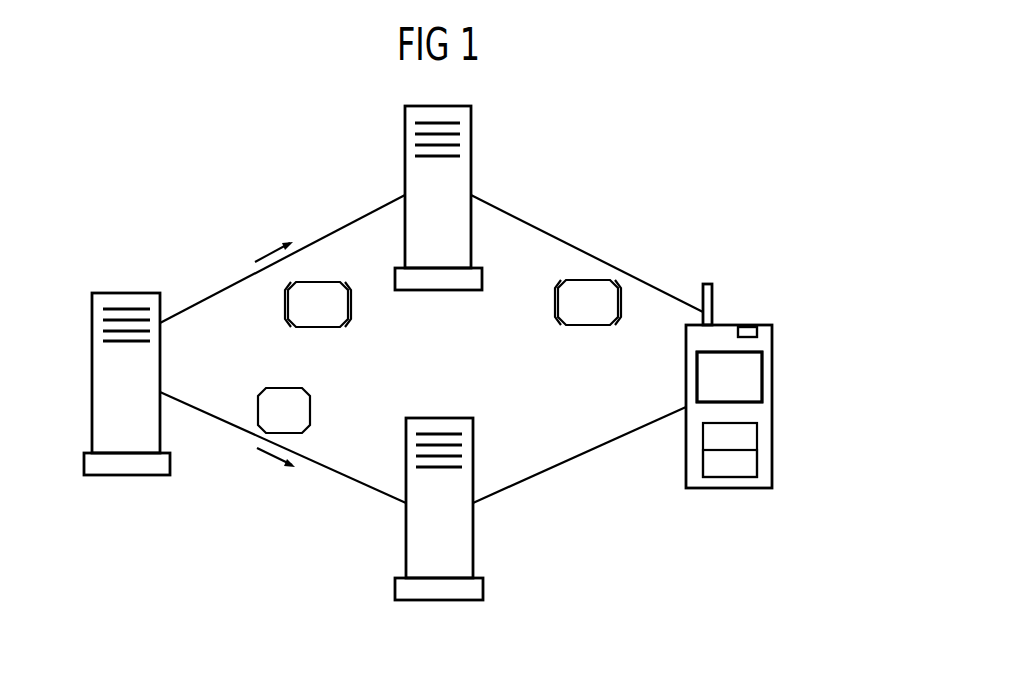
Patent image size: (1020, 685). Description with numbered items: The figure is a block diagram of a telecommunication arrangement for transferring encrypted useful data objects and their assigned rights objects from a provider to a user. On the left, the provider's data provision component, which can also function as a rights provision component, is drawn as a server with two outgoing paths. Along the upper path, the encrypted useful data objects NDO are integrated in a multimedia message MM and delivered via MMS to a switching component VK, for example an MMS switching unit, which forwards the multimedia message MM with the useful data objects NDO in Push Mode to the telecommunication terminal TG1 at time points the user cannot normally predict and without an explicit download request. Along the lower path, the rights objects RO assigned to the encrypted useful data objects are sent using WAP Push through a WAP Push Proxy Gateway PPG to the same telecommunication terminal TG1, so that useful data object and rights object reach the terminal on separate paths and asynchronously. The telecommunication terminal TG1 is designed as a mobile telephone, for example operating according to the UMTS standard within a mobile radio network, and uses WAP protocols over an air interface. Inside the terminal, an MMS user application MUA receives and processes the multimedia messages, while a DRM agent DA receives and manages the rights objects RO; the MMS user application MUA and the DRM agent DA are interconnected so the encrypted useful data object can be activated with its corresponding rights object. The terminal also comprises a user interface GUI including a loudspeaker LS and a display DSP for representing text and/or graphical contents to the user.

The switching component VK is at (458, 177).
The WAP Push Proxy Gateway PPG is at (460, 536).
The telecommunication terminal TG1 is at (778, 414).
The loudspeaker LS is at (747, 332).
The display DSP is at (749, 378).
The user interface GUI is at (850, 326).
The MMS user application MUA is at (745, 436).
The DRM agent DA is at (745, 463).
The multimedia message MM is at (389, 281).
The useful data object NDO is at (453, 303).
The rights object RO is at (283, 427).